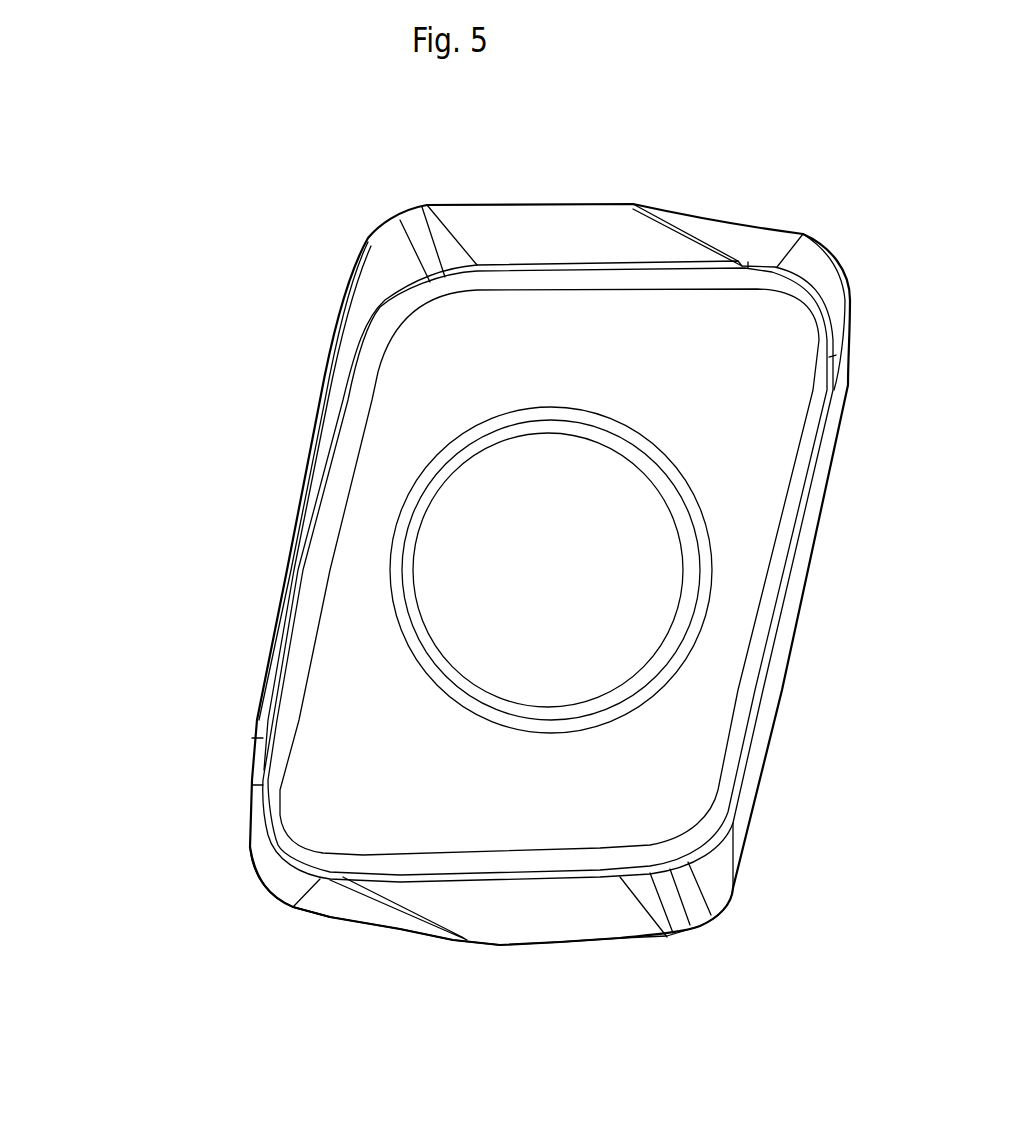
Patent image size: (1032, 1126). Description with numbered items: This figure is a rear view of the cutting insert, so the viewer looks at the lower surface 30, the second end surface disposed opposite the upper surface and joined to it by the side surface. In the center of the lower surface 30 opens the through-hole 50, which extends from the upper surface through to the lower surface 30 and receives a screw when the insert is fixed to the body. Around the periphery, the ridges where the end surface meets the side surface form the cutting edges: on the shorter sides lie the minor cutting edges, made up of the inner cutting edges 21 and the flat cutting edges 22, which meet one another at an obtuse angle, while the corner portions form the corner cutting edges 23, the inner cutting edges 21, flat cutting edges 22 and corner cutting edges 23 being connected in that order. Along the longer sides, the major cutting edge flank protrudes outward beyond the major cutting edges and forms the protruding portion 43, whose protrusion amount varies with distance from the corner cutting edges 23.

The inner cutting edge 21 is at (616, 940).
The flat cutting edge 22 is at (372, 927).
The corner cutting edge 23 is at (247, 868).
The lower surface 30 is at (355, 725).
The protruding portion 43 is at (273, 636).
The through-hole 50 is at (676, 549).